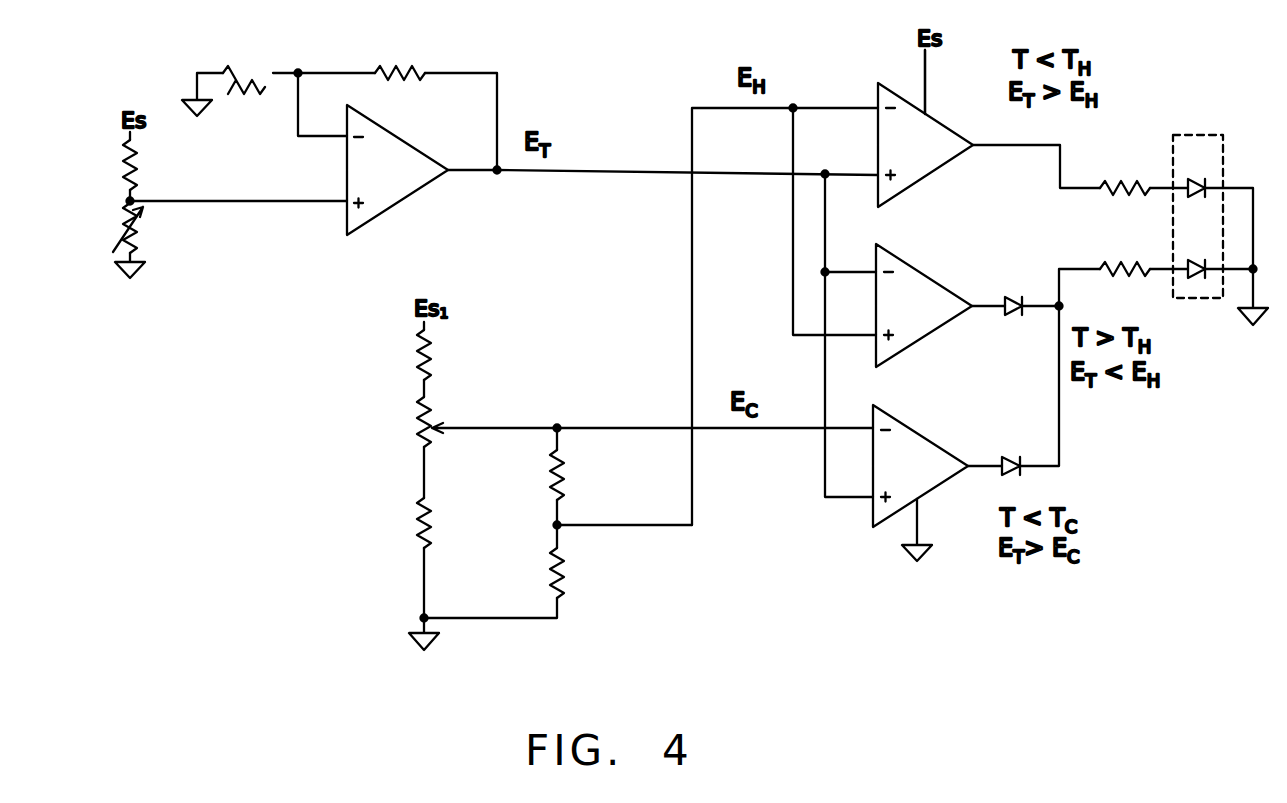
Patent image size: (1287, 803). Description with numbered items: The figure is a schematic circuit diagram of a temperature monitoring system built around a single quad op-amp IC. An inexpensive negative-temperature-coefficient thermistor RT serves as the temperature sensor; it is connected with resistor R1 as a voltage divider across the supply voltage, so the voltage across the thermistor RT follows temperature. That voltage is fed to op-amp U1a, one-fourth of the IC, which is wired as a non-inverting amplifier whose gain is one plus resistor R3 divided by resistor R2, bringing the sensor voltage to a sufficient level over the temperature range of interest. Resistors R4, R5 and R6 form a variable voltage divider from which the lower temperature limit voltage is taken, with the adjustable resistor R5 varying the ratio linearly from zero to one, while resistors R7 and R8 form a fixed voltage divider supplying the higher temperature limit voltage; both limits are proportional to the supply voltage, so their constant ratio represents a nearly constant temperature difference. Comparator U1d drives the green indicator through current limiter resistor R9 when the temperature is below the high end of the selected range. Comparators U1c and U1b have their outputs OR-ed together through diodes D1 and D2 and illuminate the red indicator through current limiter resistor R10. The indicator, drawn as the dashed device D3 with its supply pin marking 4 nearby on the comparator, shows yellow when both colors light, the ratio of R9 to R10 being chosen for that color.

The resistor R1 is at (103, 165).
The thermistor RT is at (106, 228).
The resistor R2 is at (244, 92).
The resistor R3 is at (400, 93).
The resistor R4 is at (396, 358).
The resistor R5 is at (396, 422).
The resistor R6 is at (396, 523).
The resistor R7 is at (532, 475).
The resistor R8 is at (532, 573).
The current limiter resistor R9 is at (1125, 210).
The current limiter resistor R10 is at (1125, 291).
The op-amp U1a is at (397, 170).
The comparator U1b is at (920, 466).
The comparator U1c is at (924, 305).
The comparator U1d is at (925, 145).
The supply pin 4 of U1d 4 is at (936, 83).
The diode D1 is at (1019, 286).
The diode D2 is at (1017, 448).
The bicolor LED D3 (green/red) D3 is at (1198, 199).